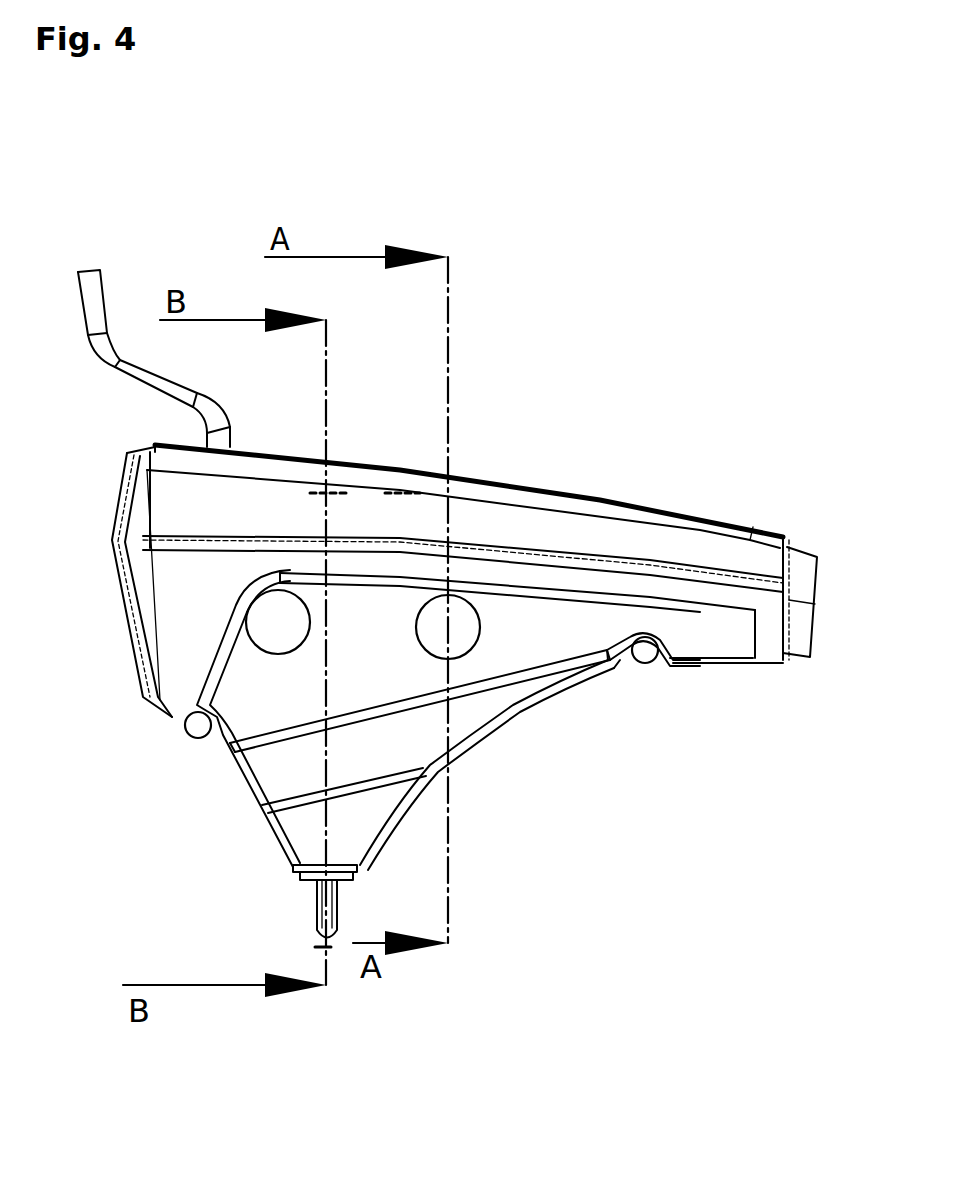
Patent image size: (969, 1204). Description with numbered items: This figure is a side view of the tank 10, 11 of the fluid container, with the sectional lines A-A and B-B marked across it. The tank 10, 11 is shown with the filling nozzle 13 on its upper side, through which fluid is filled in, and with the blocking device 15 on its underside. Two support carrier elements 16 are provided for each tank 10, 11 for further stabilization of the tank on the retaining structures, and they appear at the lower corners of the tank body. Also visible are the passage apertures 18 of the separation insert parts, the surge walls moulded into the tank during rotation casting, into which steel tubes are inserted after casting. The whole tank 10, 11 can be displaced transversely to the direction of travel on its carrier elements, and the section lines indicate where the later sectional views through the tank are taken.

The left first tank 10 is at (522, 760).
The right second tank 11 is at (578, 715).
The filling nozzle 13 is at (87, 297).
The blocking device 15 is at (330, 910).
The support carrier element 16 is at (190, 737).
The passage aperture 18 is at (270, 633).